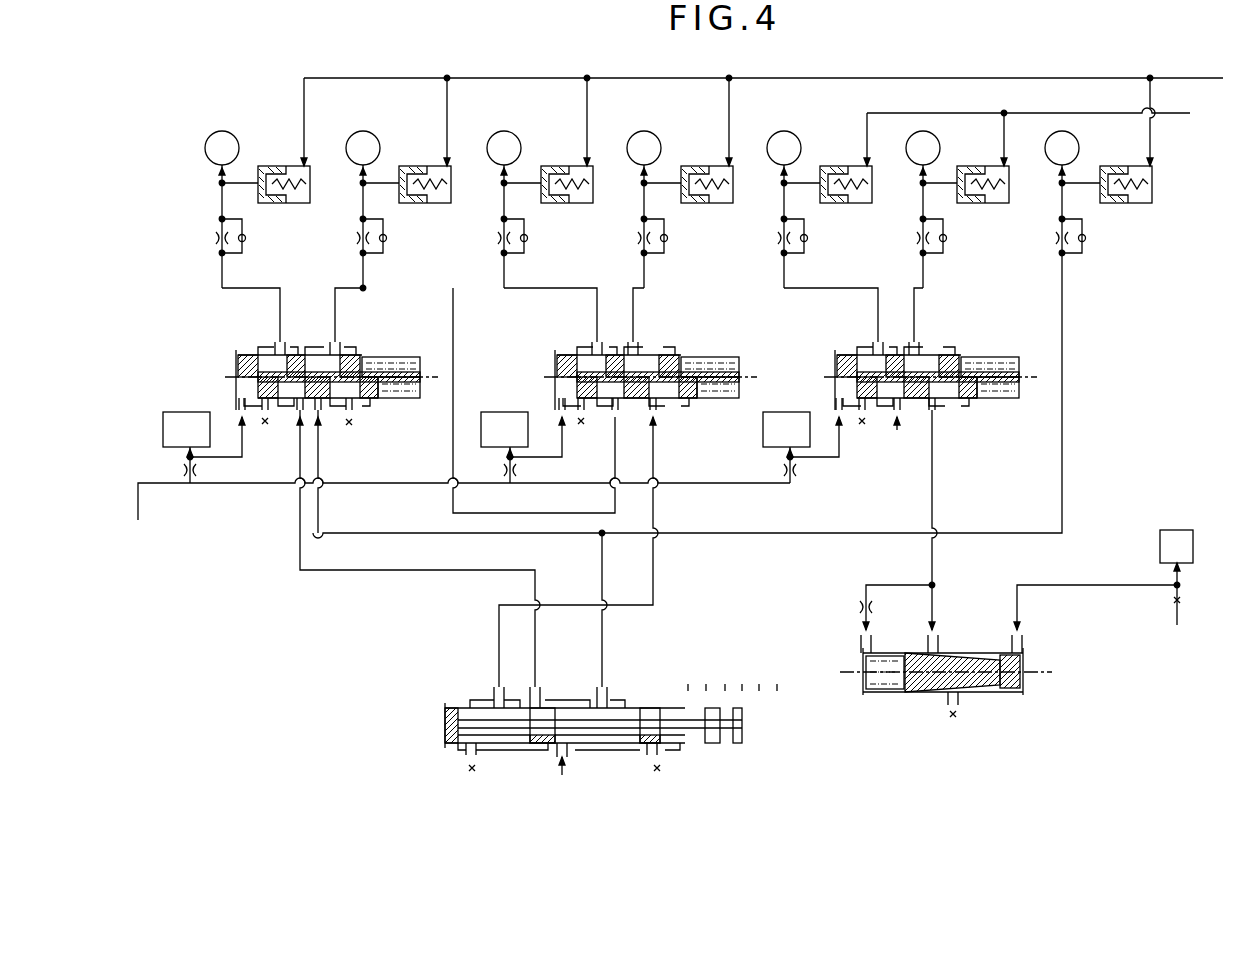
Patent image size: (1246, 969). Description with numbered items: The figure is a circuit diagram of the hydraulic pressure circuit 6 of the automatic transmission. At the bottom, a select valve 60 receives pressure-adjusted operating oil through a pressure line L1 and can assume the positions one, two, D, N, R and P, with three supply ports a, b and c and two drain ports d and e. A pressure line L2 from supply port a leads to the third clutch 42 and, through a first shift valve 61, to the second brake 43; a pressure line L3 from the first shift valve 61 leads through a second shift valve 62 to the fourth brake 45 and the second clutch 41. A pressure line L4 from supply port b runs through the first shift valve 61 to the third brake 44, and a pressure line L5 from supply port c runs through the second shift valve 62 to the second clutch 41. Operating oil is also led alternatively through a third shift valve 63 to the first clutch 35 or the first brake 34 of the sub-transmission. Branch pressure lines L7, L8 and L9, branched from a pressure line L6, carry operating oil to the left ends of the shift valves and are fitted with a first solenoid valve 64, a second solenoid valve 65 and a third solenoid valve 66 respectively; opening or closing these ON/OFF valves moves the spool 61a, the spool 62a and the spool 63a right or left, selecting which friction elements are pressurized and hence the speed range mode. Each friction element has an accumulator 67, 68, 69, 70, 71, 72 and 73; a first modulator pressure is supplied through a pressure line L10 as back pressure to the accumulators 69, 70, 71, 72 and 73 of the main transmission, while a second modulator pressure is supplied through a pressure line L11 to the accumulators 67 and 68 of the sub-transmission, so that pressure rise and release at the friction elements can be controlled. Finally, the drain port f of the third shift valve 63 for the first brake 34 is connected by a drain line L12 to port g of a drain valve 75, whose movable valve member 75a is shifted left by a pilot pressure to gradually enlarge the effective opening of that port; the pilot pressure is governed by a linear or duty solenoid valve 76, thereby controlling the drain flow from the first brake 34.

The hydraulic pressure circuit 6 is at (423, 76).
The first brake 34 is at (940, 148).
The first clutch 35 is at (796, 131).
The second clutch 41 is at (656, 131).
The third clutch 42 is at (1078, 148).
The second brake 43 is at (366, 131).
The third brake 44 is at (224, 131).
The fourth brake 45 is at (504, 131).
The select valve 60 is at (620, 731).
The first shift valve 61 is at (330, 356).
The spool 61a is at (340, 353).
The second shift valve 62 is at (630, 356).
The spool 62a is at (640, 351).
The third shift valve 63 is at (910, 368).
The spool 63a is at (920, 349).
The first solenoid valve 64 is at (184, 412).
The second solenoid valve 65 is at (504, 412).
The third solenoid valve 66 is at (786, 412).
The accumulator 67 is at (858, 203).
The accumulator 68 is at (998, 203).
The accumulator 69 is at (720, 203).
The accumulator 70 is at (1136, 203).
The accumulator 71 is at (437, 203).
The accumulator 72 is at (292, 203).
The accumulator 73 is at (576, 203).
The drain valve 75 is at (949, 668).
The movable valve member 75a is at (950, 652).
The linear solenoid valve 76 is at (1177, 530).
The pressure line L1 is at (555, 779).
The pressure line L2 is at (605, 589).
The pressure line L3 is at (453, 334).
The pressure line L4 is at (474, 570).
The pressure line L5 is at (654, 580).
The pressure line L6 is at (376, 480).
The branch pressure line L7 is at (232, 466).
The branch pressure line L8 is at (552, 462).
The branch pressure line L9 is at (826, 458).
The pressure line L10 is at (940, 76).
The pressure line L11 is at (1030, 114).
The drain line L12 is at (938, 478).